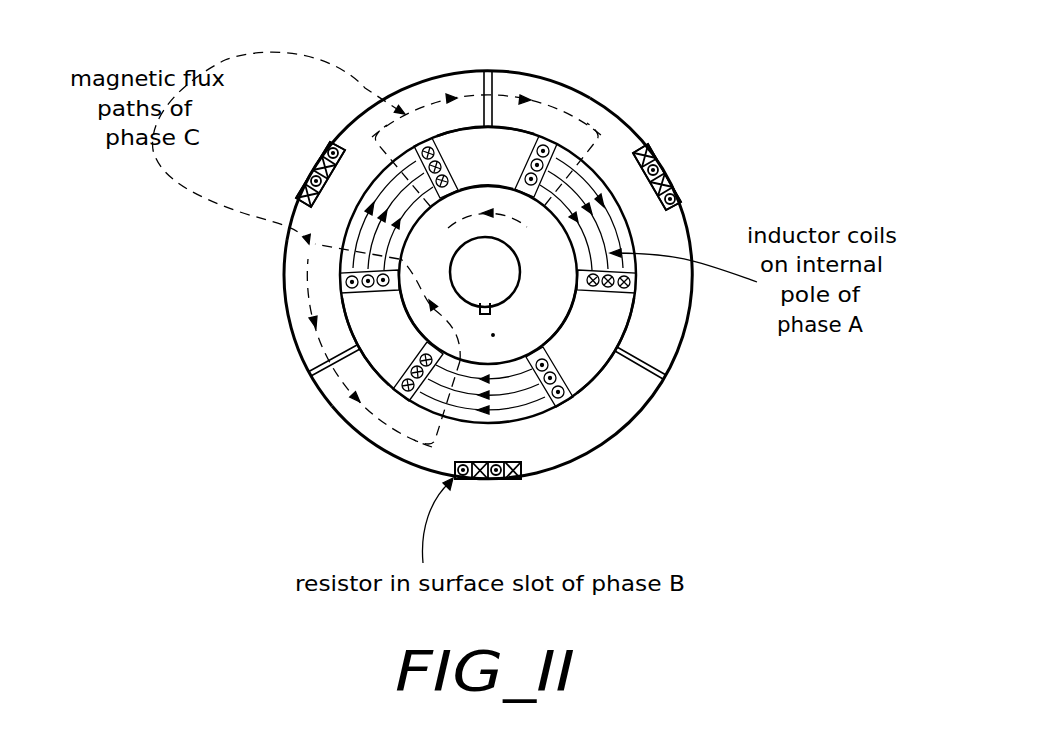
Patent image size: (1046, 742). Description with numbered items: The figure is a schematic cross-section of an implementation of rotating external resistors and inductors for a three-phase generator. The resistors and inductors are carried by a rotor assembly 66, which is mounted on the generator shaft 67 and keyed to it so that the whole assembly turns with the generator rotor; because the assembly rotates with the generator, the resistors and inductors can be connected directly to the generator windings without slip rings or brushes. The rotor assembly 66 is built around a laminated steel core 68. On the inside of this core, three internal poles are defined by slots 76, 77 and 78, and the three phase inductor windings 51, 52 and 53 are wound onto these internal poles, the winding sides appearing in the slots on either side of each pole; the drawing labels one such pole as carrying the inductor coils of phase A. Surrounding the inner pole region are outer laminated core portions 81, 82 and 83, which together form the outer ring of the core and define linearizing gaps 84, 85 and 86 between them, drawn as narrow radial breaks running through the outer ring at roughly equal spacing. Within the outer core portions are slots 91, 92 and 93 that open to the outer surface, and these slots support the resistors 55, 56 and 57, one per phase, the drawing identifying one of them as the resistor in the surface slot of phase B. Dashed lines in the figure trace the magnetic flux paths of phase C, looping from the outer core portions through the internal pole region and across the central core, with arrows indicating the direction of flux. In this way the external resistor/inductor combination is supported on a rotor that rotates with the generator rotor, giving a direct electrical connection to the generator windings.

The phase inductor winding 51 is at (575, 158).
The phase inductor winding 52 is at (535, 355).
The phase inductor winding 53 is at (337, 258).
The resistor 55 is at (682, 177).
The resistor 56 is at (463, 483).
The resistor 57 is at (306, 172).
The rotor assembly 66 is at (337, 467).
The generator shaft 67 is at (468, 284).
The laminated steel core 68 is at (533, 310).
The slot 76 is at (603, 323).
The slot 77 is at (335, 378).
The slot 78 is at (503, 140).
The outer laminated core portion 81 is at (660, 231).
The outer laminated core portion 82 is at (407, 443).
The outer laminated core portion 83 is at (423, 85).
The linearizing gap 84 is at (661, 385).
The linearizing gap 85 is at (387, 347).
The linearizing gap 86 is at (483, 71).
The slot 91 is at (636, 146).
The slot 92 is at (530, 472).
The slot 93 is at (340, 140).